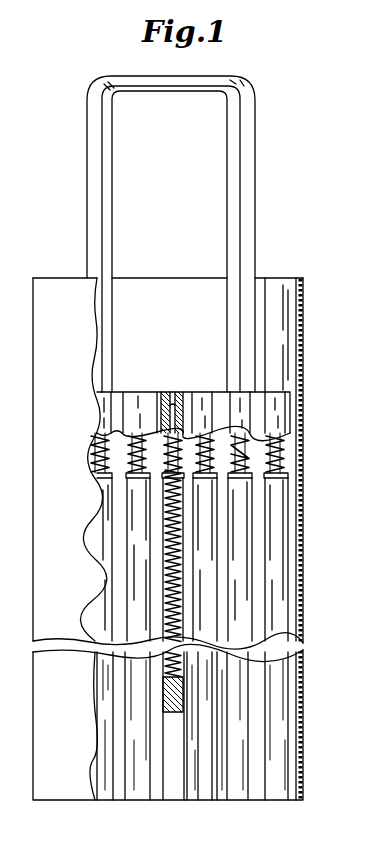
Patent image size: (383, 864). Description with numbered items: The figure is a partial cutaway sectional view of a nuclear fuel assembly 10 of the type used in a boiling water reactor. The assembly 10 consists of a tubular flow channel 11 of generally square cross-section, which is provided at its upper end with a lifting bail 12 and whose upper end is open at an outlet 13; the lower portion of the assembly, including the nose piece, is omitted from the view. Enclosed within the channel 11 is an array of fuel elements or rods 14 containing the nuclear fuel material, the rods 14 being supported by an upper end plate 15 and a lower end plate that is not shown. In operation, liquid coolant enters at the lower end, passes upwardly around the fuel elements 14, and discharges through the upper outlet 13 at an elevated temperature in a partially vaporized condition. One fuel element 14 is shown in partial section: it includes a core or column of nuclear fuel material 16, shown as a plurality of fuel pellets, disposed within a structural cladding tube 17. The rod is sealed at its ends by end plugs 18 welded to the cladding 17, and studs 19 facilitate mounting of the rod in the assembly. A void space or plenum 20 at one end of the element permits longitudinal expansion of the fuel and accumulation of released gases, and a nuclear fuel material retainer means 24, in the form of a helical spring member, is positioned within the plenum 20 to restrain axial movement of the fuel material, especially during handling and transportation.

The fuel assembly 10 is at (262, 182).
The tubular flow channel 11 is at (300, 513).
The lifting bail 12 is at (248, 101).
The outlet 13 is at (174, 278).
The fuel elements or rods 14 is at (126, 542).
The upper end plate 15 is at (262, 412).
The nuclear fuel material 16 is at (163, 690).
The cladding tube 17 is at (185, 585).
The end plugs 18 is at (190, 396).
The studs 19 is at (283, 463).
The plenum 20 is at (165, 585).
The nuclear fuel material retainer means 24 is at (165, 512).